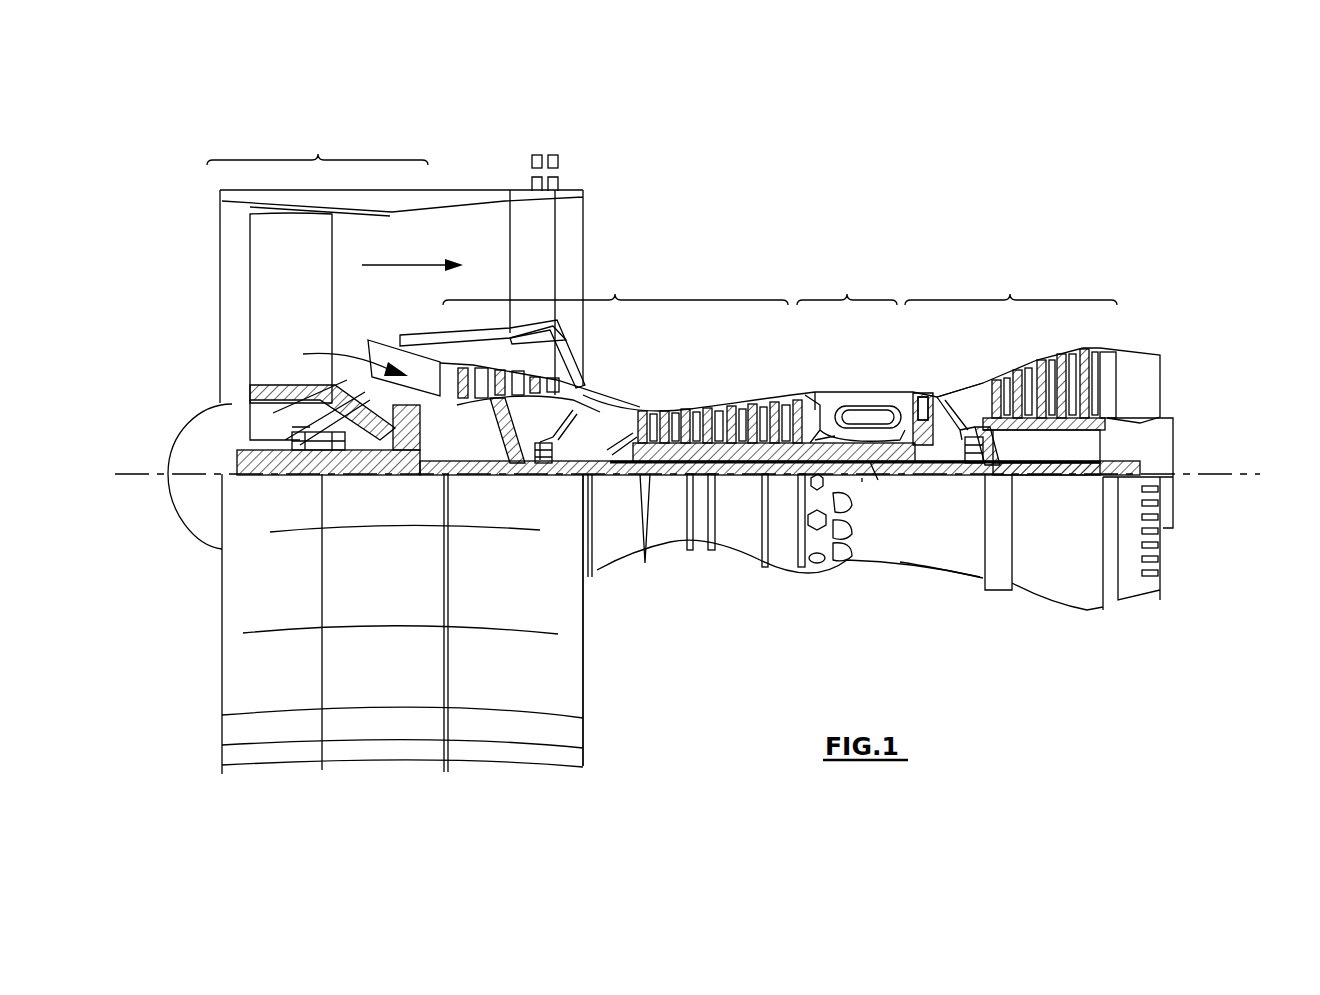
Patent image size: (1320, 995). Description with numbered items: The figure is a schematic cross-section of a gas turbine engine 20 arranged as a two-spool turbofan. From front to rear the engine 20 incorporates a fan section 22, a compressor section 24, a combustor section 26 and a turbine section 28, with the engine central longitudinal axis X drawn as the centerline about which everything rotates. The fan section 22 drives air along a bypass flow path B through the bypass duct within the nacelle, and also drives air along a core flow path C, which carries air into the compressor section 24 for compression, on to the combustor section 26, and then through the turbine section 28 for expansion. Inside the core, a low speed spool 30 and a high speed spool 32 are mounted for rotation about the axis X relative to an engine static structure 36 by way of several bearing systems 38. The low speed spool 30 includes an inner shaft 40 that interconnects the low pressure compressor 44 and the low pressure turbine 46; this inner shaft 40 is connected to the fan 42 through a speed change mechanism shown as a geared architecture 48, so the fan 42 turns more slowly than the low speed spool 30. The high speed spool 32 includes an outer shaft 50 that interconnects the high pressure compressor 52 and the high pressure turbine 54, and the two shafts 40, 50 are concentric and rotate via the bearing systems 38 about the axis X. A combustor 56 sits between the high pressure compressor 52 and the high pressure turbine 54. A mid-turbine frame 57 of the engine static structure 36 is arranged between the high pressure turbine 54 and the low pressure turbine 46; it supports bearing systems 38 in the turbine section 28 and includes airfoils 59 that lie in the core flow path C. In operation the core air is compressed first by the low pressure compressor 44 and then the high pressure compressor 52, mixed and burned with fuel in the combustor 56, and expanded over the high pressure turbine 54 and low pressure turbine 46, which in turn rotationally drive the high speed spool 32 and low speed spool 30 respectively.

The gas turbine engine 20 is at (862, 240).
The fan section 22 is at (375, 446).
The compressor section 24 is at (519, 364).
The combustor section 26 is at (847, 352).
The turbine section 28 is at (1036, 437).
The low speed spool 30 is at (742, 478).
The high speed spool 32 is at (780, 430).
The engine static structure 36 is at (781, 562).
The bearing systems 38 is at (300, 452).
The inner shaft 40 is at (604, 480).
The fan 42 is at (308, 320).
The low pressure compressor 44 is at (518, 375).
The low pressure turbine 46 is at (1050, 372).
The geared architecture 48 is at (410, 455).
The outer shaft 50 is at (866, 462).
The high pressure compressor 52 is at (718, 440).
The high pressure turbine 54 is at (922, 393).
The combustor 56 is at (858, 417).
The mid-turbine frame 57 is at (964, 384).
The airfoils 59 is at (1000, 462).
The bypass flow path B is at (404, 266).
The core flow path C is at (361, 368).
The engine central longitudinal axis X is at (1255, 474).